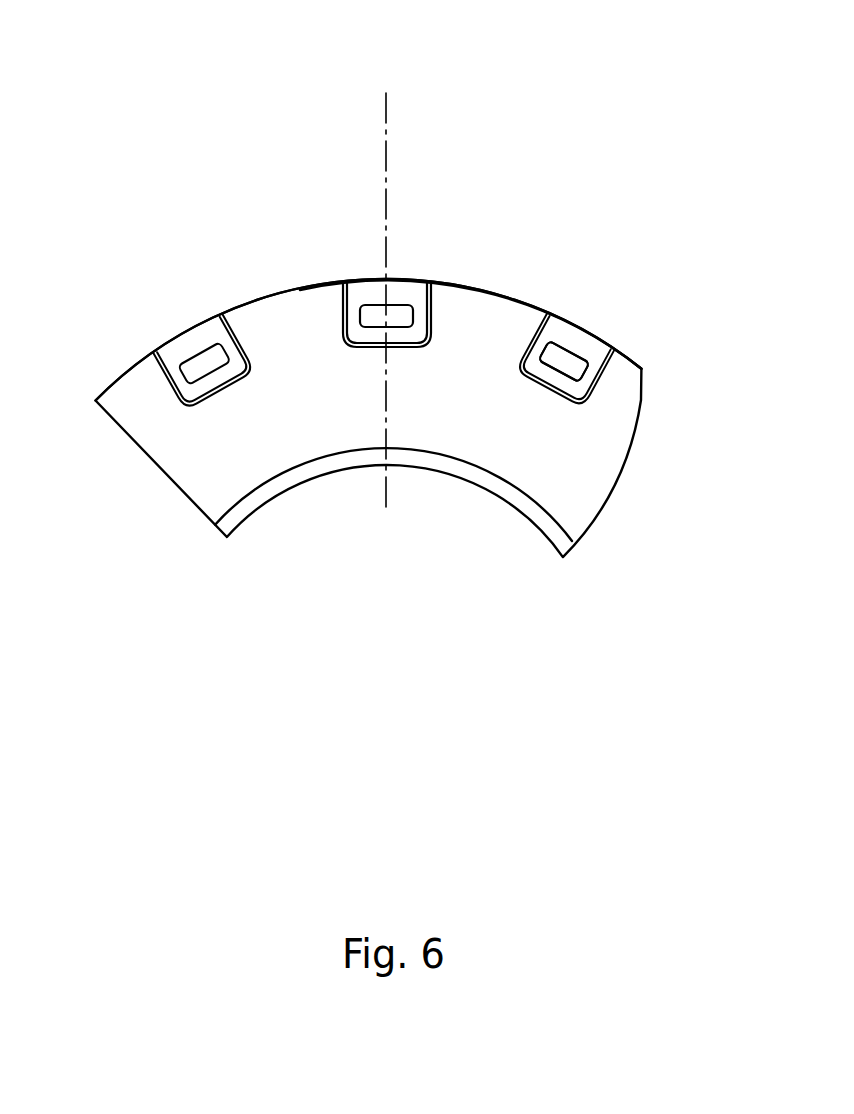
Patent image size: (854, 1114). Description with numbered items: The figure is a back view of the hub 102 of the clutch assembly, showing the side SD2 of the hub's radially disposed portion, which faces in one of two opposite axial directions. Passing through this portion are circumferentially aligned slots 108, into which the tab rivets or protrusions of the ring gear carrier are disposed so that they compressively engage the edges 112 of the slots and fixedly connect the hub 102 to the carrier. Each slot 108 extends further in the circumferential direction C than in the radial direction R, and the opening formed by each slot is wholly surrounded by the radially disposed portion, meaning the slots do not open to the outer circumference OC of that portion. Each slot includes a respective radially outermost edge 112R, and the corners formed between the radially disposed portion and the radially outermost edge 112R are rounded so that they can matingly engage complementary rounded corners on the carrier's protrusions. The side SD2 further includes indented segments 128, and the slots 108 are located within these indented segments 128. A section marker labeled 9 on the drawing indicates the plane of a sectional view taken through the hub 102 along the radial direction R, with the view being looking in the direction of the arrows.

The hub 102 is at (411, 325).
The slots 108 is at (205, 362).
The edges 112 is at (240, 337).
The radially outermost edge 112R is at (580, 350).
The indented segments 128 is at (563, 337).
The circumferential direction C is at (23, 228).
The radial direction R is at (386, 568).
The outer circumference OC is at (313, 280).
The side SD2 is at (500, 320).
The section line 9- 9 is at (335, 93).